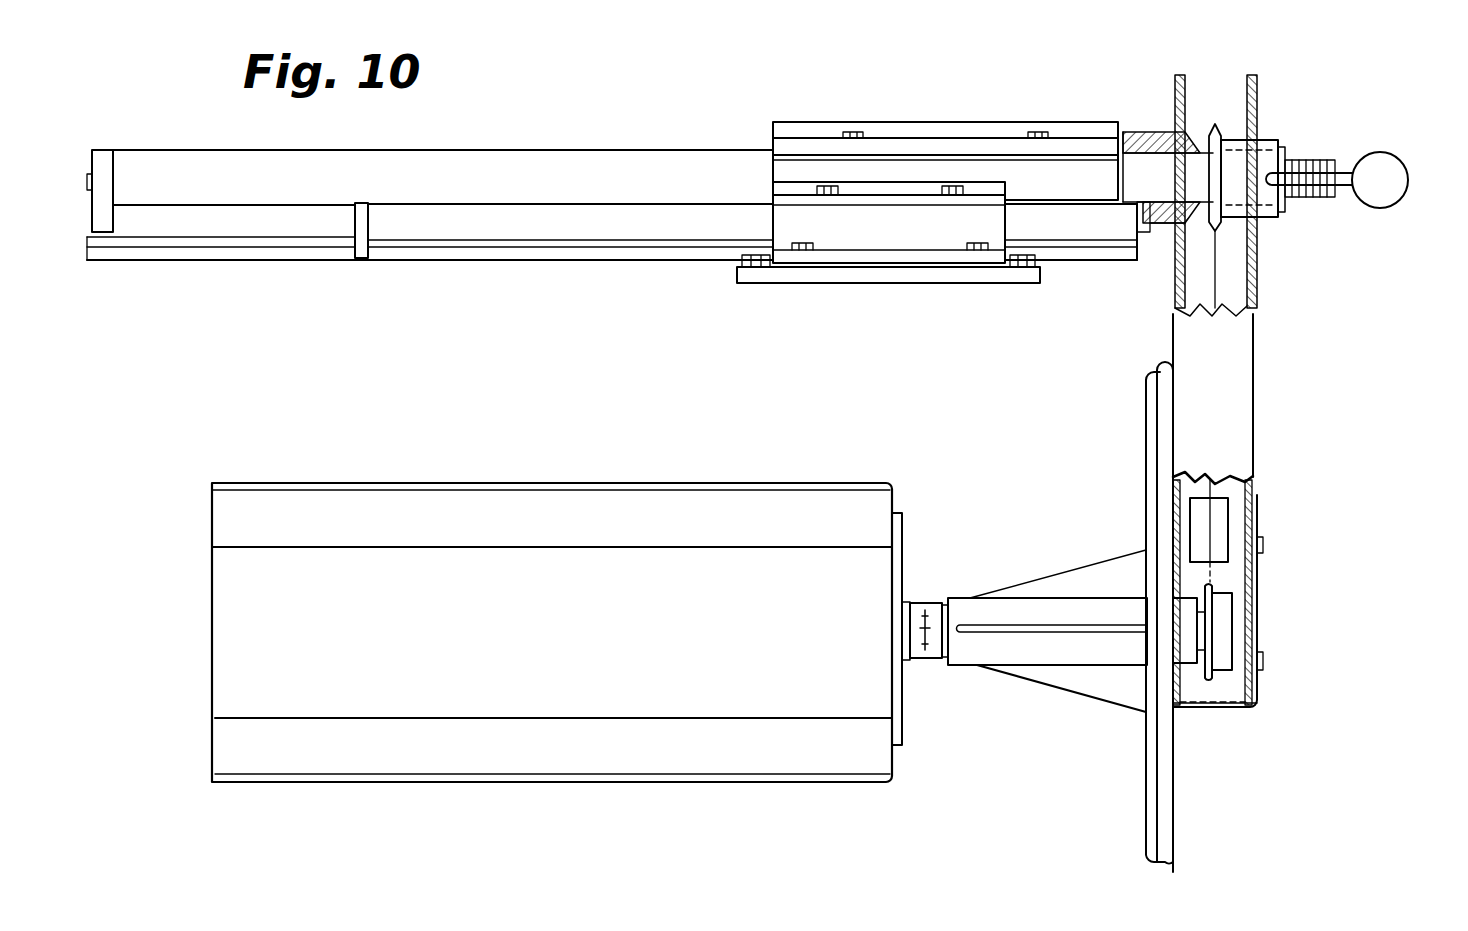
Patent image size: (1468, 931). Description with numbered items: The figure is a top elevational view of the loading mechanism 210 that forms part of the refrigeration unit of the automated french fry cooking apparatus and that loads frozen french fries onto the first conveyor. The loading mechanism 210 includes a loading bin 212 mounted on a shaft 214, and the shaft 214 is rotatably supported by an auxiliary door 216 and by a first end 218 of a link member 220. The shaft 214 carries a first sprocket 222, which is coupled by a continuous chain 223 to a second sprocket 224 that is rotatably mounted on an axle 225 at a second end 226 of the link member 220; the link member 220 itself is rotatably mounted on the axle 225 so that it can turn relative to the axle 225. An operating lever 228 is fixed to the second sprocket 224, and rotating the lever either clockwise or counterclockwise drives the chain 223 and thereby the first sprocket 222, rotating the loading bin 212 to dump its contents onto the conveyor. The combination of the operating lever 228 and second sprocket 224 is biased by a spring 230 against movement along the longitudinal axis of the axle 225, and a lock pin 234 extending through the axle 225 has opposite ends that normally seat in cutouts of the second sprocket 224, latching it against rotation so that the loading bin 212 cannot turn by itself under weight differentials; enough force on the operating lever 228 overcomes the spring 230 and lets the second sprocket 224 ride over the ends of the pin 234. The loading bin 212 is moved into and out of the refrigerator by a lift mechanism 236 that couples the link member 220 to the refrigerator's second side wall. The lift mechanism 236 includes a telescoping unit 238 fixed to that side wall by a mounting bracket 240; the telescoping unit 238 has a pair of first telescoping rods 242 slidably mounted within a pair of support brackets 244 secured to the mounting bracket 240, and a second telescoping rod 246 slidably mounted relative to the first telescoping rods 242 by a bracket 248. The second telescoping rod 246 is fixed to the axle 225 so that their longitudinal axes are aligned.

The loading mechanism 210 is at (1296, 408).
The loading bin 212 is at (835, 780).
The shaft 214 is at (940, 663).
The auxiliary door 216 is at (1160, 795).
The first end of link member 218 is at (1230, 710).
The link member 220 is at (1240, 458).
The first sprocket 222 is at (1255, 668).
The continuous chain 223 is at (1215, 535).
The second sprocket 224 is at (1222, 131).
The axle 225 is at (1172, 226).
The second end of link member 226 is at (1258, 85).
The operating lever 228 is at (1345, 186).
The spring 230 is at (1300, 200).
The lock pin 234 is at (1206, 178).
The lift mechanism 236 is at (483, 143).
The telescoping unit 238 is at (645, 258).
The mounting bracket 240 is at (838, 276).
The first telescoping rods 242 is at (418, 224).
The support brackets 244 is at (790, 223).
The second telescoping rod 246 is at (352, 166).
The bracket 248 is at (826, 138).